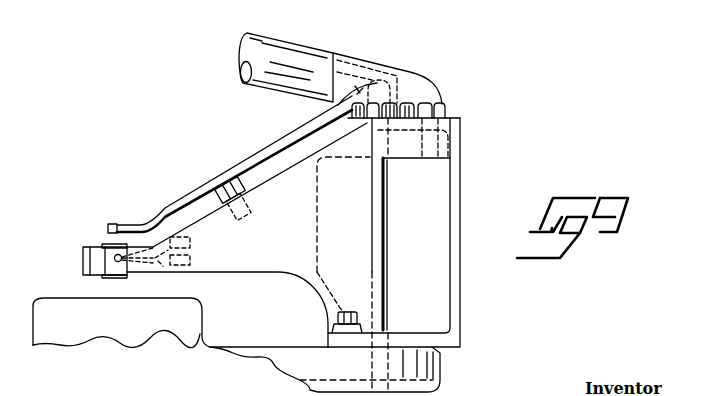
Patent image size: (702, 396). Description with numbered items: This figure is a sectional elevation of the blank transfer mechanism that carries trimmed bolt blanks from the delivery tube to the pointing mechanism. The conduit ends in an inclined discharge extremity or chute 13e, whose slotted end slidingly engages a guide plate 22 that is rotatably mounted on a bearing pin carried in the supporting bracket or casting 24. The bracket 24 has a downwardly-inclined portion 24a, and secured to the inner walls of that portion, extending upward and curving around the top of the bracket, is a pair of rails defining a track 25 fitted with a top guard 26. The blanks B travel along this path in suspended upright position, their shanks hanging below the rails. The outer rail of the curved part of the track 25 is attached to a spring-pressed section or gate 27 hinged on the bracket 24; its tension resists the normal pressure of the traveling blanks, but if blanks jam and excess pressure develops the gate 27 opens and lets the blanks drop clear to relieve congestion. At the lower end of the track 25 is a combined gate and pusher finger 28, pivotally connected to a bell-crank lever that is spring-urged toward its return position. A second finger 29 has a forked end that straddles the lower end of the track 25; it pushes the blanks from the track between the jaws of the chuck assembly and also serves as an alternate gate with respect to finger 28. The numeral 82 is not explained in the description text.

The vehicle frame 82 is at (96, 8).
The inclined discharge extremity or chute 13e is at (285, 57).
The guide plate 22 is at (418, 87).
The blanks B is at (443, 110).
The supporting bracket or casting 24 is at (453, 278).
The downwardly-inclined portion 24a is at (203, 249).
The track 25 is at (268, 178).
The top guard 26 is at (256, 157).
The spring-pressed section or gate 27 is at (408, 152).
The combined gate and pusher finger 28 is at (170, 277).
The finger 29 is at (107, 243).